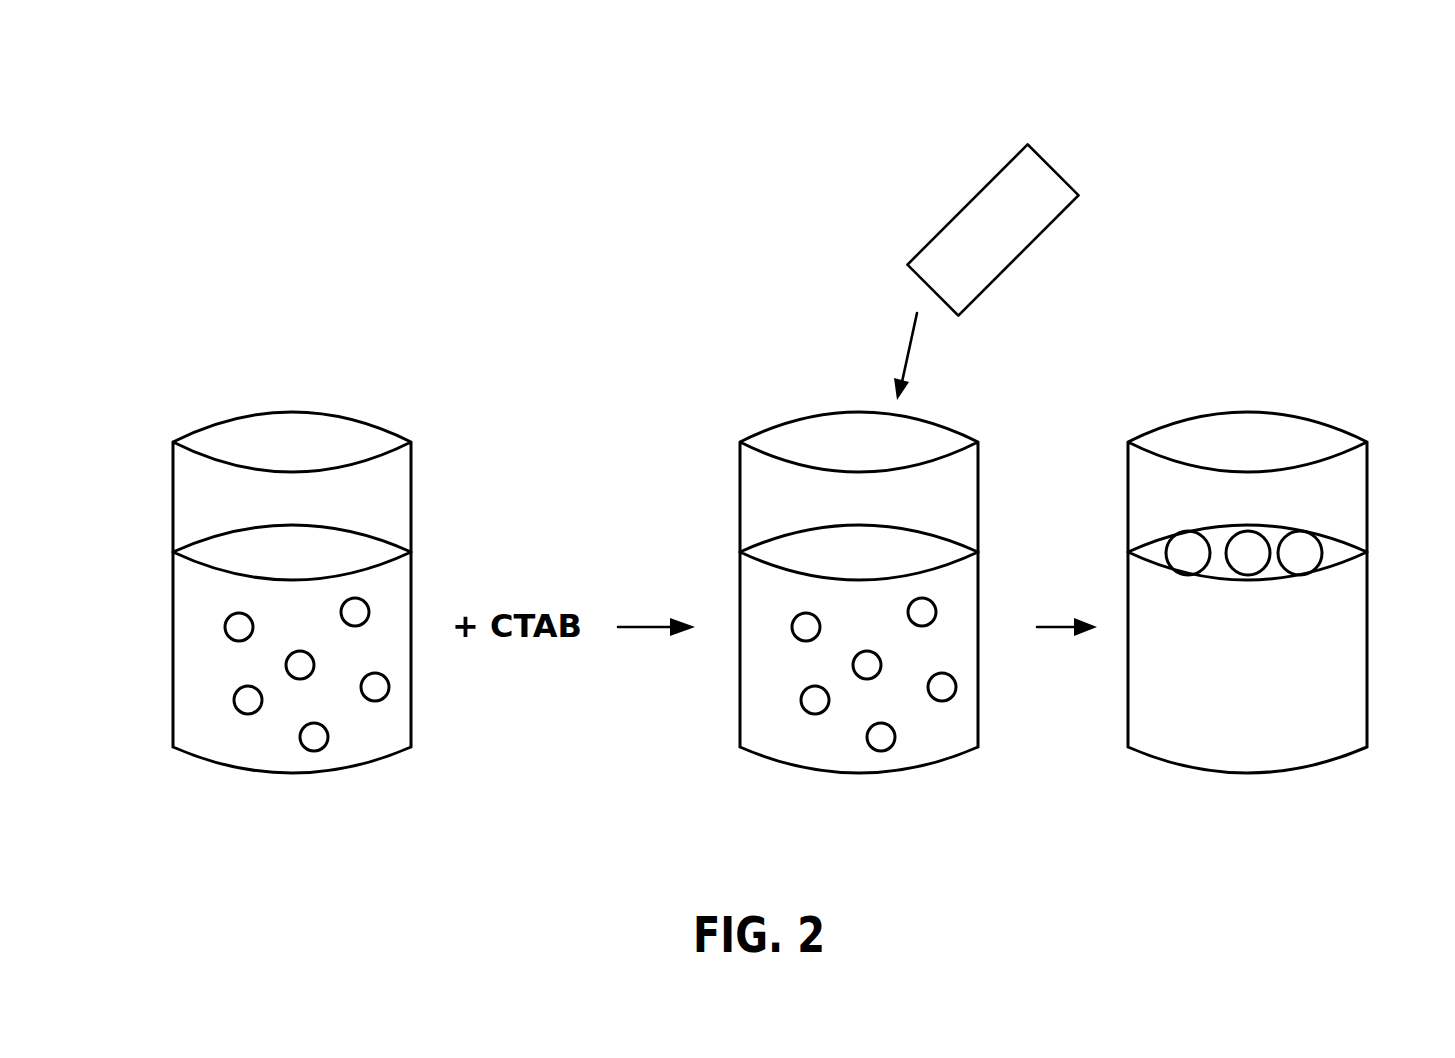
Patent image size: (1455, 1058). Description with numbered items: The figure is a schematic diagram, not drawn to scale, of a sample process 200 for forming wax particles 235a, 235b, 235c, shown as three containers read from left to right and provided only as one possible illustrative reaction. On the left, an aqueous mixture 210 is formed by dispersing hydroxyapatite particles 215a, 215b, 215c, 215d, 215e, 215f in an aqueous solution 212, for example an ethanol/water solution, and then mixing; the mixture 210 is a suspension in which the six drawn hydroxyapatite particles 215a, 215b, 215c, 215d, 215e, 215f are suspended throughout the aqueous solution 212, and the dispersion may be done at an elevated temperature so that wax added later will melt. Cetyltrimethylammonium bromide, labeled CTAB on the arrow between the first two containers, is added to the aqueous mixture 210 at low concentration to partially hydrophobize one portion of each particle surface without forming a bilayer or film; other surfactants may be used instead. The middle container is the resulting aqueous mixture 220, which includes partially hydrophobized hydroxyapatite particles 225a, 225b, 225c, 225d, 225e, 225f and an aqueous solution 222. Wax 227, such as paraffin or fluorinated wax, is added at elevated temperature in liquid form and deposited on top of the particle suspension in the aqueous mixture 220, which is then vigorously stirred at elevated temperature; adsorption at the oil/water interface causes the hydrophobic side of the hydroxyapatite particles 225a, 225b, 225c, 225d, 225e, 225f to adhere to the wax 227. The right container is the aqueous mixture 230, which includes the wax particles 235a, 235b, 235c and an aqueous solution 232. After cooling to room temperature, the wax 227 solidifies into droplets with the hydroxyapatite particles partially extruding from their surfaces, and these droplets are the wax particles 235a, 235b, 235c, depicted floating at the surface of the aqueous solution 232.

The process 200 is at (1281, 133).
The aqueous mixture 210 is at (290, 412).
The aqueous solution 212 is at (210, 667).
The hydroxyapatite particle 215a is at (228, 618).
The hydroxyapatite particle 215b is at (248, 714).
The hydroxyapatite particle 215c is at (322, 749).
The hydroxyapatite particle 215d is at (384, 697).
The hydroxyapatite particle 215e is at (366, 602).
The hydroxyapatite particle 215f is at (299, 651).
The aqueous mixture 220 is at (857, 412).
The aqueous solution 222 is at (815, 608).
The partially hydrophobized hydroxyapatite particle 225a is at (795, 618).
The partially hydrophobized hydroxyapatite particle 225b is at (815, 714).
The partially hydrophobized hydroxyapatite particle 225c is at (889, 749).
The partially hydrophobized hydroxyapatite particle 225d is at (951, 697).
The partially hydrophobized hydroxyapatite particle 225e is at (933, 602).
The partially hydrophobized hydroxyapatite particle 225f is at (866, 651).
The wax 227 is at (986, 272).
The aqueous mixture 230 is at (1247, 412).
The aqueous solution 232 is at (1203, 626).
The wax particle 235a is at (1167, 546).
The wax particle 235b is at (1250, 576).
The wax particle 235c is at (1323, 553).